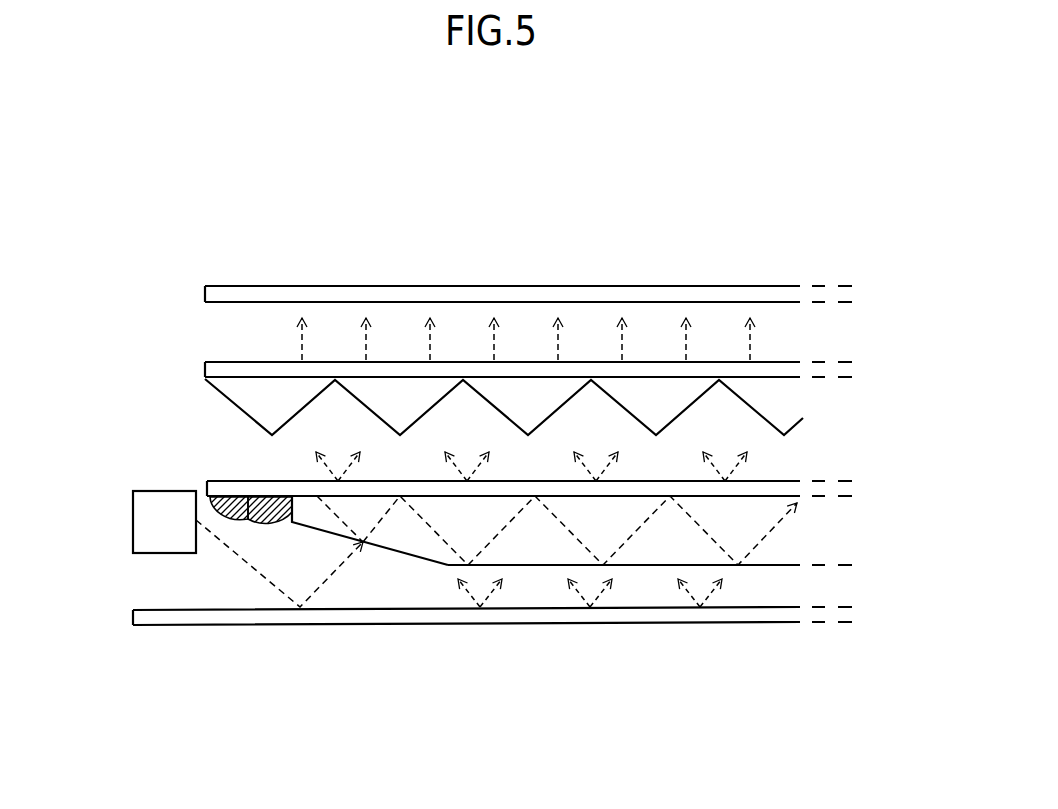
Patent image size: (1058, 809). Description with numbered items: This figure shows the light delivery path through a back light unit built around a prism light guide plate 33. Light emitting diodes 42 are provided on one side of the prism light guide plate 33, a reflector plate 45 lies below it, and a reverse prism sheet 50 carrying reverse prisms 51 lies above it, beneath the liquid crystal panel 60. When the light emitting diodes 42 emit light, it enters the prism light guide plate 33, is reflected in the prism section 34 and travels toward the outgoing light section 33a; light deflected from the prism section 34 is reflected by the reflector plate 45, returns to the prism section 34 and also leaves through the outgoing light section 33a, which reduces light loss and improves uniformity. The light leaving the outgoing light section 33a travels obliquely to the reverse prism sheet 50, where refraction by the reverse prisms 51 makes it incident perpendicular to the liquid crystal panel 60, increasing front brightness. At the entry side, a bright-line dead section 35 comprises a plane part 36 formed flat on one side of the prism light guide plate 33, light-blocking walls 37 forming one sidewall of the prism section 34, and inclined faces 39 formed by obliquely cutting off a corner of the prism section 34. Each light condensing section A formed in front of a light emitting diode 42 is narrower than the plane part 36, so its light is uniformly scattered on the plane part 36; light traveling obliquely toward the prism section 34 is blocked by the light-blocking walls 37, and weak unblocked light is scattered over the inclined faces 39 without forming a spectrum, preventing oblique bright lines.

The liquid crystal panel 60 is at (809, 270).
The reverse prism sheet 50 is at (815, 356).
The reverse prisms 51 is at (243, 405).
The outgoing light section 33a is at (783, 478).
The prism light guide plate 33 is at (845, 521).
The prism section 34 is at (760, 553).
The bright-line dead section 35 is at (329, 625).
The plane part 36 is at (250, 524).
The light-blocking walls 37 is at (276, 523).
The inclined faces 39 is at (368, 546).
The light emitting diodes 42 is at (140, 518).
The reflector plate 45 is at (640, 614).
The light condensing section A is at (213, 512).